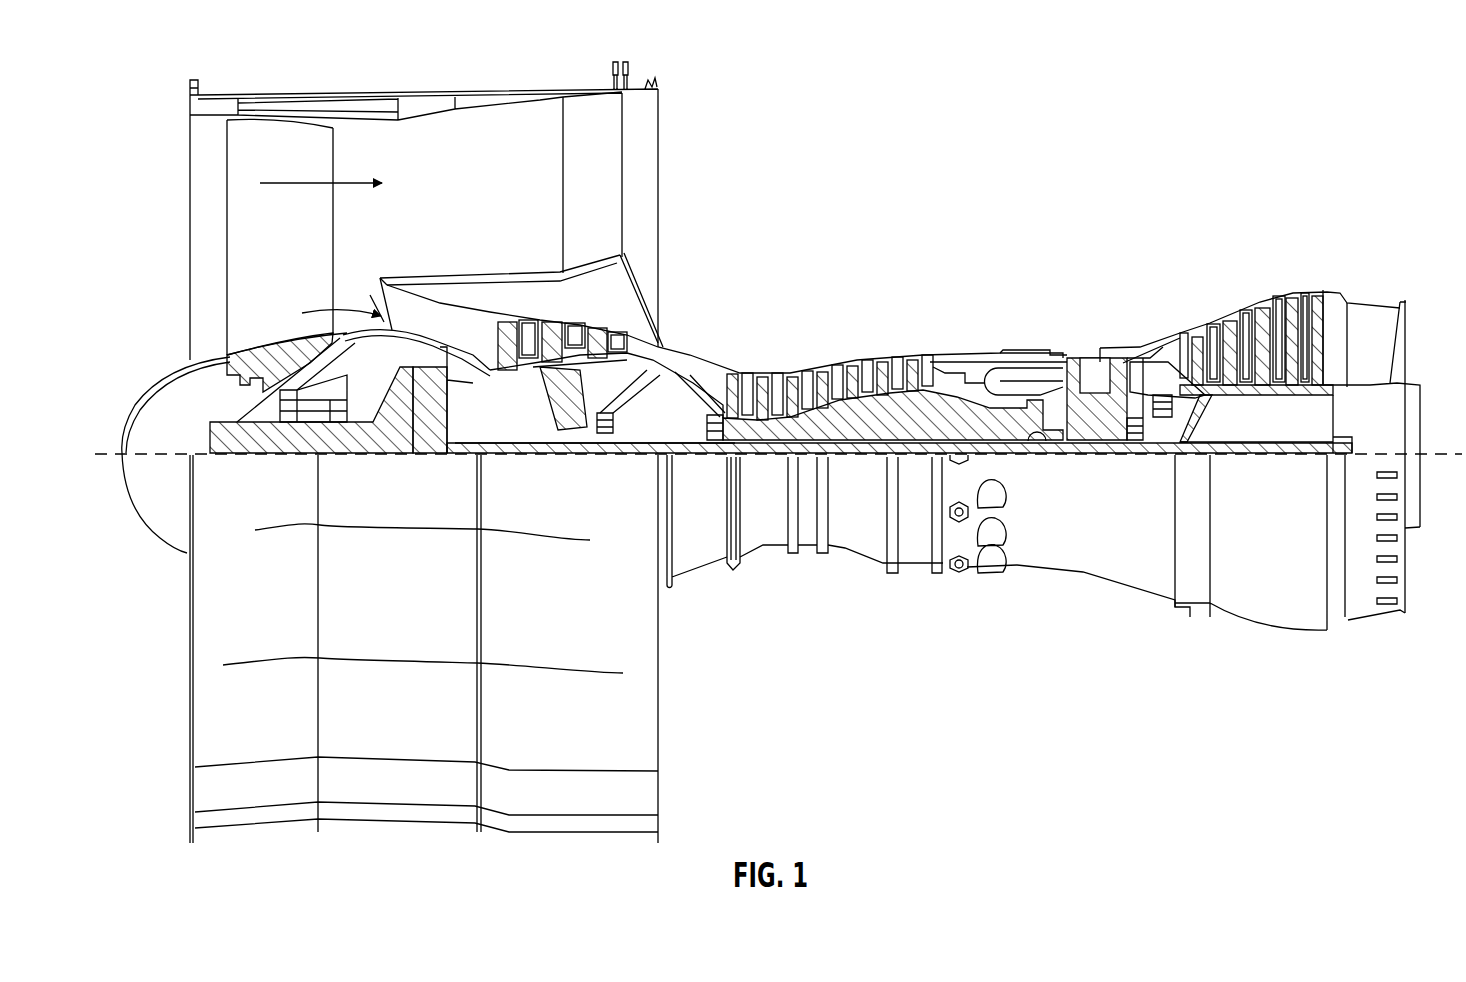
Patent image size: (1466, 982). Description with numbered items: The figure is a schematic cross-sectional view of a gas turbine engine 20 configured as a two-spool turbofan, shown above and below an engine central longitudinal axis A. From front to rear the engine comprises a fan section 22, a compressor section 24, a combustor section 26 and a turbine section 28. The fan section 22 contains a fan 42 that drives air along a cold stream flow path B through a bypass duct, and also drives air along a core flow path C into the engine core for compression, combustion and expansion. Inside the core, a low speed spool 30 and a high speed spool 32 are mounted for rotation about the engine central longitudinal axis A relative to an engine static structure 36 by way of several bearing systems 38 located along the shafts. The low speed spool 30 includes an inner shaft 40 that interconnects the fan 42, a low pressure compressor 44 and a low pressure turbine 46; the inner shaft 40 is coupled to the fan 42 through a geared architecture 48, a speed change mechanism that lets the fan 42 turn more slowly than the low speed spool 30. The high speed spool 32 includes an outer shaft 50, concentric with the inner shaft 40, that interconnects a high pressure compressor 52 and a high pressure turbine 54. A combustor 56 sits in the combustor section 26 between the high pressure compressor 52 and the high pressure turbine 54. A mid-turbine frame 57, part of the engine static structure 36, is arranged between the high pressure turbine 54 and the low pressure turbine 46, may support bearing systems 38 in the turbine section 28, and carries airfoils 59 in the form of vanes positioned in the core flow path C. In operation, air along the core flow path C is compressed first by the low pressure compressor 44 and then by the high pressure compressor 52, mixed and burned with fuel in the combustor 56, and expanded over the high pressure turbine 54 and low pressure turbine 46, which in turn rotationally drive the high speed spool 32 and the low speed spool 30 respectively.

The gas turbine engine 20 is at (1227, 126).
The fan section 22 is at (286, 76).
The compressor section 24 is at (720, 344).
The combustor section 26 is at (1001, 300).
The turbine section 28 is at (1128, 275).
The low speed spool 30 is at (878, 462).
The high speed spool 32 is at (927, 393).
The engine static structure 36 is at (916, 576).
The bearing systems 38 is at (591, 436).
The inner shaft 40 is at (672, 452).
The fan 42 is at (302, 256).
The low pressure compressor 44 is at (577, 327).
The low pressure turbine 46 is at (1260, 317).
The geared architecture 48 is at (427, 424).
The outer shaft 50 is at (1035, 440).
The high pressure compressor 52 is at (850, 417).
The high pressure turbine 54 is at (1097, 353).
The combustor 56 is at (423, 103).
The mid-turbine frame 57 is at (1149, 338).
The airfoils 59 is at (1170, 373).
The engine central longitudinal axis A is at (1461, 452).
The cold stream flow path B is at (306, 182).
The core flow path C is at (320, 313).